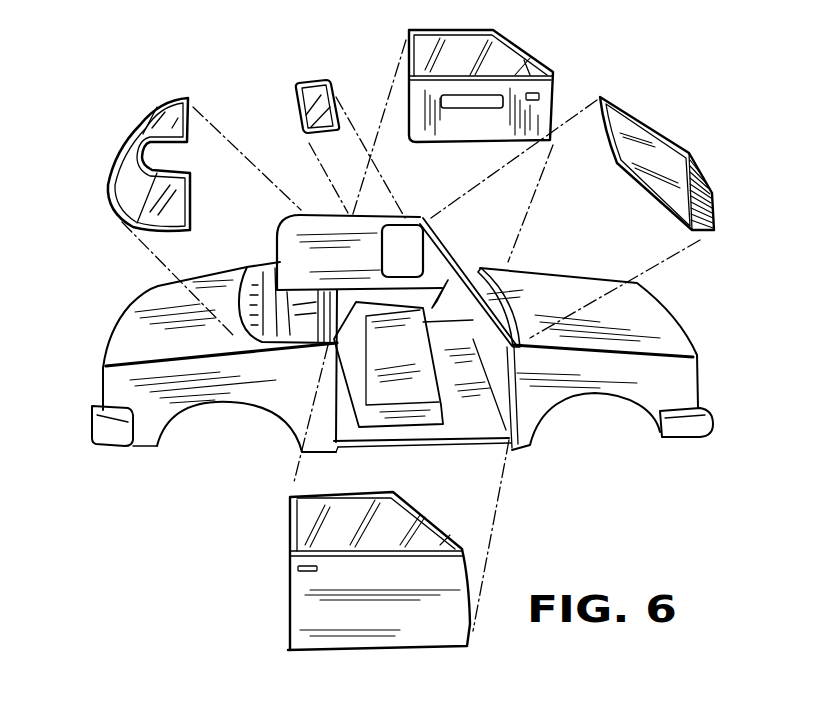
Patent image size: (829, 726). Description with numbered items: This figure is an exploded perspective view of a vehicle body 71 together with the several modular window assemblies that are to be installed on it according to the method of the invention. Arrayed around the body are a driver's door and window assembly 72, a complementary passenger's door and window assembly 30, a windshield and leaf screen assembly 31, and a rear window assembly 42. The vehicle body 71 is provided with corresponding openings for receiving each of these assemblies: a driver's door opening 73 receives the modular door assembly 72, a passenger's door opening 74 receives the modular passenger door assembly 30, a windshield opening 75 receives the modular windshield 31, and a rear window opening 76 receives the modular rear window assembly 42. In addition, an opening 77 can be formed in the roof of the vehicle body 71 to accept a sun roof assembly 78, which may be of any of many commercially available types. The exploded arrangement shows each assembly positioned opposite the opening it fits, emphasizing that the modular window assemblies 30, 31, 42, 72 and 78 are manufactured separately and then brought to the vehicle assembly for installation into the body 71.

The passenger's door and window assembly 30 is at (288, 580).
The windshield and leaf screen assembly 31 is at (655, 128).
The rear window assembly 42 is at (122, 138).
The vehicle body 71 is at (96, 381).
The driver's door and window assembly 72 is at (531, 43).
The driver's door opening 73 is at (470, 272).
The passenger's door opening 74 is at (337, 415).
The windshield opening 75 is at (470, 305).
The rear window opening 76 is at (273, 252).
The roof opening 77 is at (406, 222).
The sun roof assembly 78 is at (306, 86).